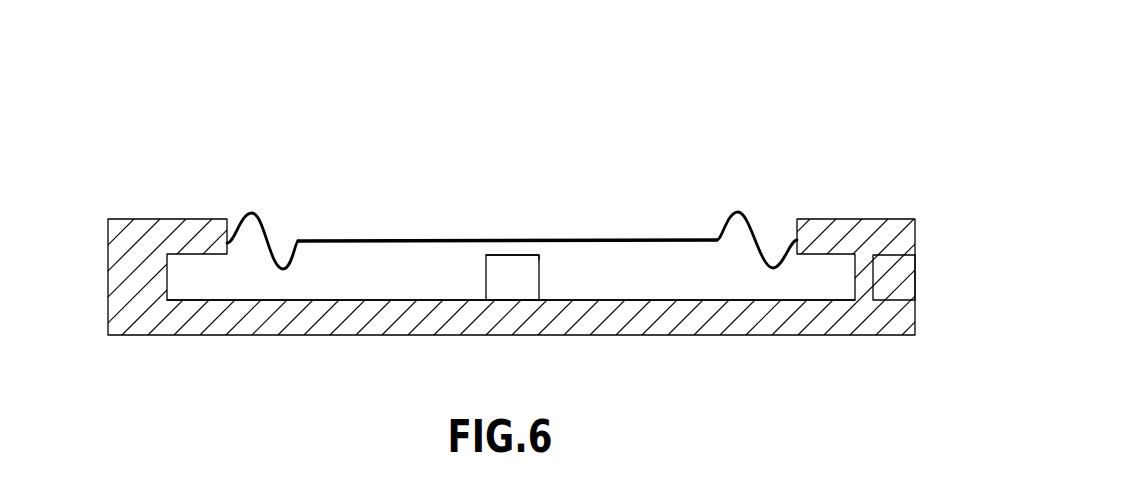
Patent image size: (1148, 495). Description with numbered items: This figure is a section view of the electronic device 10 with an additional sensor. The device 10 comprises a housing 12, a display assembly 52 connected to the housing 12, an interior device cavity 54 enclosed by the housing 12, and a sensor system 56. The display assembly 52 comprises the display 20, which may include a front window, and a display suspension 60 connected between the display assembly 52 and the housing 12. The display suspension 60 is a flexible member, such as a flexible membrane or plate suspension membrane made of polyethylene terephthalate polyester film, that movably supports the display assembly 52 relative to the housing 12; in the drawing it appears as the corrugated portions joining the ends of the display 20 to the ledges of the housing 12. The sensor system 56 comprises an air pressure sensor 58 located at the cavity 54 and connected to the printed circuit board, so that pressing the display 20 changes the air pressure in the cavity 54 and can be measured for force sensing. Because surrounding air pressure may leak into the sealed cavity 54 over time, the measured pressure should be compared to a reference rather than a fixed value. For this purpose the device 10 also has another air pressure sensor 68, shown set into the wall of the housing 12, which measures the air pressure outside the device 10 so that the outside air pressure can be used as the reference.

The device 10 is at (792, 68).
The housing 12 is at (108, 278).
The display 20 is at (517, 236).
The display assembly 52 is at (620, 162).
The interior device cavity 54 is at (329, 275).
The sensor system 56 is at (540, 258).
The air pressure sensor 58 is at (508, 289).
The display suspension 60 is at (272, 243).
The another air pressure sensor 68 is at (898, 282).